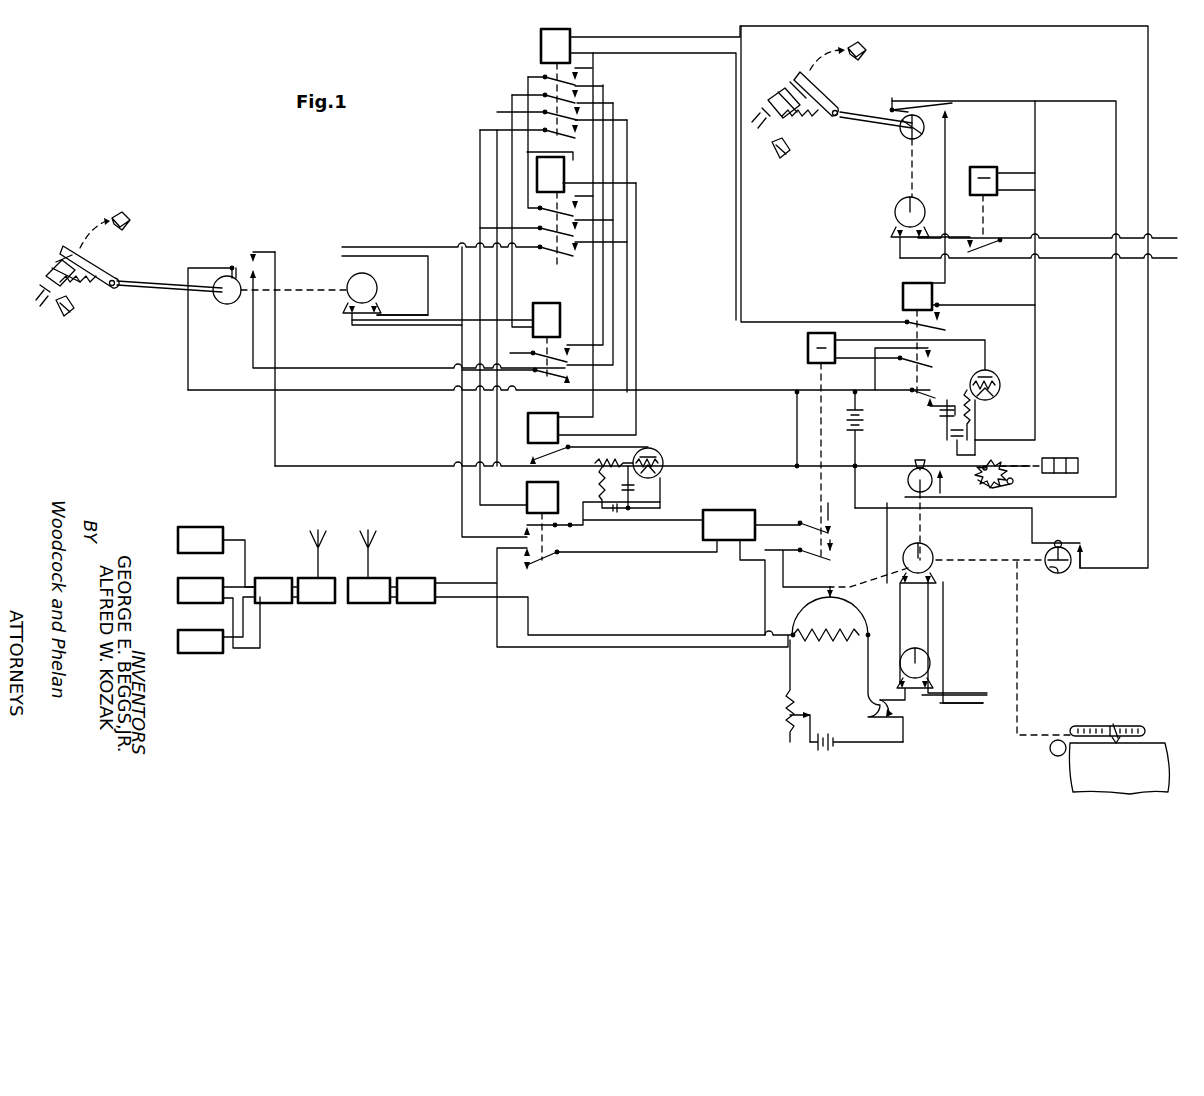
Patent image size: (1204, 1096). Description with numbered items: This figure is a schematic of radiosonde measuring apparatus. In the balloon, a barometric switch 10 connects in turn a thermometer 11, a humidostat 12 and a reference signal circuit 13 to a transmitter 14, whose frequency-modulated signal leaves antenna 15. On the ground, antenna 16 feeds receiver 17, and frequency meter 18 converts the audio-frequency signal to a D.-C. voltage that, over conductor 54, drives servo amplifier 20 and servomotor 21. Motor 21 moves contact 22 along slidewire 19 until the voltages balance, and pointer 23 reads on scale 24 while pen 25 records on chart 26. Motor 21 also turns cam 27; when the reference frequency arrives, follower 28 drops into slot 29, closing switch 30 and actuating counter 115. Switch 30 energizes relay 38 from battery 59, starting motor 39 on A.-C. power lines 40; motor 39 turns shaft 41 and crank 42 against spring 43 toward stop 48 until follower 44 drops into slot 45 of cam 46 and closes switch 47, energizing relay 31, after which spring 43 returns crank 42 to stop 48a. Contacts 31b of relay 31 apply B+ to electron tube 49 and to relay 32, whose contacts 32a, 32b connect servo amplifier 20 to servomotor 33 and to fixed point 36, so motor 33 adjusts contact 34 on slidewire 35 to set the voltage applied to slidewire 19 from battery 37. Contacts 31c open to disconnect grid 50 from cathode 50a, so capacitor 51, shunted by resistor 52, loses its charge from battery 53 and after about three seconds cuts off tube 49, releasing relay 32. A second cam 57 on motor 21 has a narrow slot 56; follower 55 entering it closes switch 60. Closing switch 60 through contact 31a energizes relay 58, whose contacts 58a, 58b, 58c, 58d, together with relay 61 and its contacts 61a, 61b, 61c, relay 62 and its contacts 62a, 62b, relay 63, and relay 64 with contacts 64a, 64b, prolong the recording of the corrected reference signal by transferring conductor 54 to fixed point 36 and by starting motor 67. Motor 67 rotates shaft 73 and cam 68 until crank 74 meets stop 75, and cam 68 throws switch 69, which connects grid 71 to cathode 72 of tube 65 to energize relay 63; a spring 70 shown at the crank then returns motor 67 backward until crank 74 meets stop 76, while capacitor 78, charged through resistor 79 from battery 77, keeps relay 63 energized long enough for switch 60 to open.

The barometric switch 10 is at (276, 590).
The thermometer 11 is at (216, 557).
The humidostat 12 is at (219, 613).
The reference signal circuit 13 is at (216, 625).
The transmitter 14 is at (316, 590).
The antenna 15 is at (316, 545).
The antenna 16 is at (370, 540).
The receiver 17 is at (372, 590).
The frequency meter 18 is at (416, 590).
The slidewire 19 is at (838, 600).
The servo amplifier 20 is at (751, 572).
The servomotor 21 is at (924, 547).
The contact 22 is at (825, 593).
The pointer 23 is at (1115, 726).
The scale 24 is at (1097, 726).
The pen 25 is at (1118, 740).
The record chart 26 is at (1072, 760).
The cam 27 is at (912, 485).
The cam follower 28 is at (915, 463).
The slot 29 is at (928, 490).
The switch 30 is at (967, 478).
The relay 31 is at (903, 298).
The contact 31a is at (948, 322).
The contacts 31b is at (932, 364).
The contacts 31c is at (916, 392).
The relay 32 is at (808, 356).
The relay contact 32a is at (830, 532).
The relay contact 32b is at (830, 560).
The servomotor 33 is at (918, 650).
The contact 34 is at (890, 718).
The slidewire 35 is at (880, 700).
The fixed point 36 is at (830, 640).
The battery 37 is at (833, 750).
The relay 38 is at (980, 167).
The motor 39 is at (895, 218).
The A.-C. power lines 40 is at (358, 247).
The shaft 41 is at (876, 122).
The crank 42 is at (818, 94).
The spring 43 is at (805, 142).
The follower 44 is at (912, 98).
The slot 45 is at (902, 135).
The cam 46 is at (920, 135).
The switch 47 is at (952, 108).
The stop 48 is at (866, 50).
The stop 48a is at (779, 101).
The electron tube 49 is at (992, 374).
The grid 50 is at (992, 384).
The cathode 50a is at (975, 408).
The capacitor 51 is at (940, 413).
The resistor 52 is at (951, 433).
The battery 53 is at (957, 443).
The conductor 54 is at (645, 558).
The follower 55 is at (1058, 540).
The slot 56 is at (1070, 565).
The cam 57 is at (1052, 570).
The relay 58 is at (541, 44).
The contact 58a is at (528, 77).
The contact 58b is at (575, 103).
The contact 58c is at (545, 112).
The contact 58d is at (575, 125).
The battery 59 is at (850, 422).
The switch 60 is at (1082, 550).
The relay 61 is at (550, 211).
The contact 61a is at (540, 208).
The contact 61b is at (540, 228).
The contact 61c is at (580, 253).
The relay 62 is at (546, 341).
The contact 62a is at (567, 352).
The contact 62b is at (552, 385).
The relay 63 is at (588, 438).
The relay 64 is at (542, 521).
The contact 64a is at (527, 537).
The relay contact 64b is at (537, 560).
The electronic tube 65 is at (655, 450).
The motor 67 is at (368, 284).
The cam 68 is at (230, 304).
The switch 69 is at (253, 260).
The accelerator pedal 70 is at (56, 306).
The grid 71 is at (663, 458).
The cathode 72 is at (661, 478).
The shaft 73 is at (162, 290).
The crank 74 is at (65, 250).
The stop 75 is at (130, 222).
The stop 76 is at (80, 256).
The battery 77 is at (612, 512).
The capacitor 78 is at (628, 490).
The resistor 79 is at (598, 490).
The counter 115 is at (1032, 452).